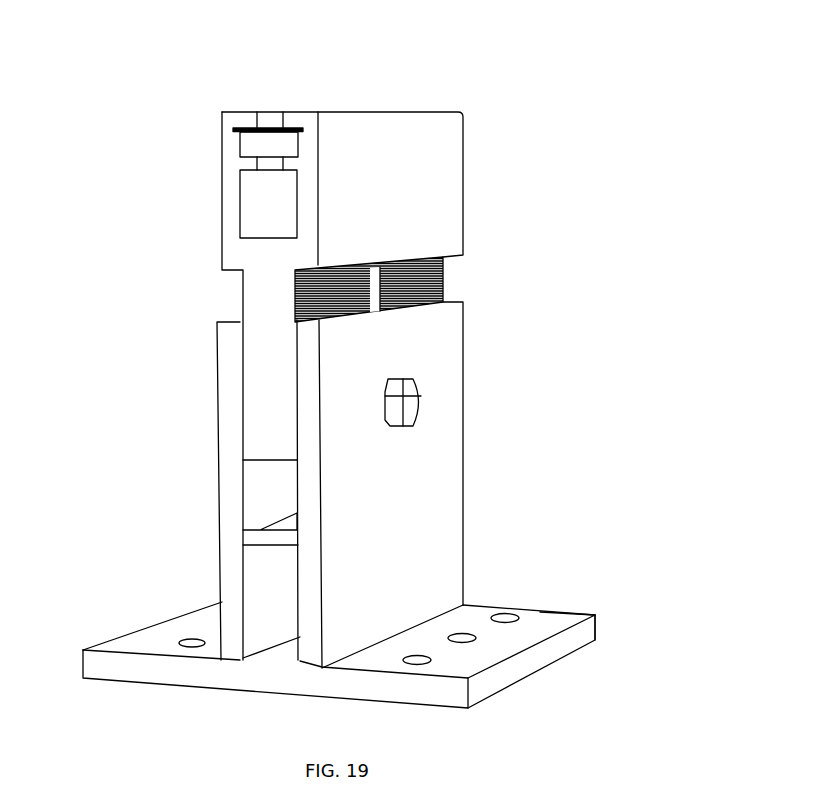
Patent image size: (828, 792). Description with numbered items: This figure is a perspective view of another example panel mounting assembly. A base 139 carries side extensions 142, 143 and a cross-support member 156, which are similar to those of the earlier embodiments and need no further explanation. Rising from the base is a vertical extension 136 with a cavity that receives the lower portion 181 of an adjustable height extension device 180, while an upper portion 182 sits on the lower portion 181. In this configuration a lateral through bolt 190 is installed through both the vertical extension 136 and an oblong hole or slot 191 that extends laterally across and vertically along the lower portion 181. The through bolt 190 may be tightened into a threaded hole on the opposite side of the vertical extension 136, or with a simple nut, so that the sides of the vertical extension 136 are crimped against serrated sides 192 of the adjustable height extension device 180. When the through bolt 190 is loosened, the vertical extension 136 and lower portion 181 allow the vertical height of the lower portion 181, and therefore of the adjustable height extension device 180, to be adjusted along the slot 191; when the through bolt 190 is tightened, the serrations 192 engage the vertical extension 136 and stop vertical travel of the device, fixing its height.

The vertical extension 136 is at (187, 382).
The base 139 is at (615, 638).
The side extension 142 is at (128, 643).
The side extension 143 is at (565, 612).
The cross-support member 156 is at (260, 528).
The adjustable height extension device 180 is at (477, 97).
The lower portion 181 is at (260, 300).
The upper portion 182 is at (218, 126).
The lateral through bolt 190 is at (412, 397).
The slot 191 is at (380, 278).
The serrated sides 192 is at (443, 277).